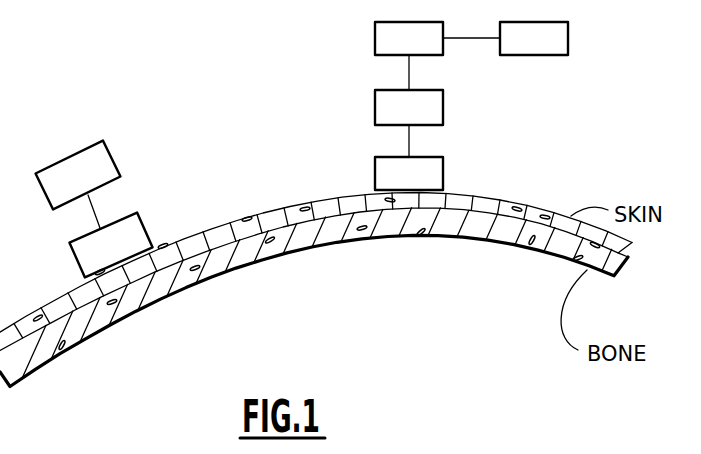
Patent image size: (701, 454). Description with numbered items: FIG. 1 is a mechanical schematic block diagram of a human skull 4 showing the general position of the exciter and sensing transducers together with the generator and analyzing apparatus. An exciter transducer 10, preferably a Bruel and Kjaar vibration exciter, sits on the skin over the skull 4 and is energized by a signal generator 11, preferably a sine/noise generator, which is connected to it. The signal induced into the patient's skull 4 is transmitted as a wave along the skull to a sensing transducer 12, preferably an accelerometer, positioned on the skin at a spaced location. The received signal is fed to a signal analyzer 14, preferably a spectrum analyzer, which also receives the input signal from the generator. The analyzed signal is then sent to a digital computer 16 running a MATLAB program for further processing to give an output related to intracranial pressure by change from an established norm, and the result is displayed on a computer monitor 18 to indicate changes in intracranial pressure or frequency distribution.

The skull 4 is at (70, 350).
The exciter transducer 10 is at (110, 245).
The signal generator 11 is at (78, 184).
The sensing transducer 12 is at (409, 173).
The signal analyzer 14 is at (409, 123).
The digital computer 16 is at (437, 56).
The computer monitor 18 is at (534, 38).